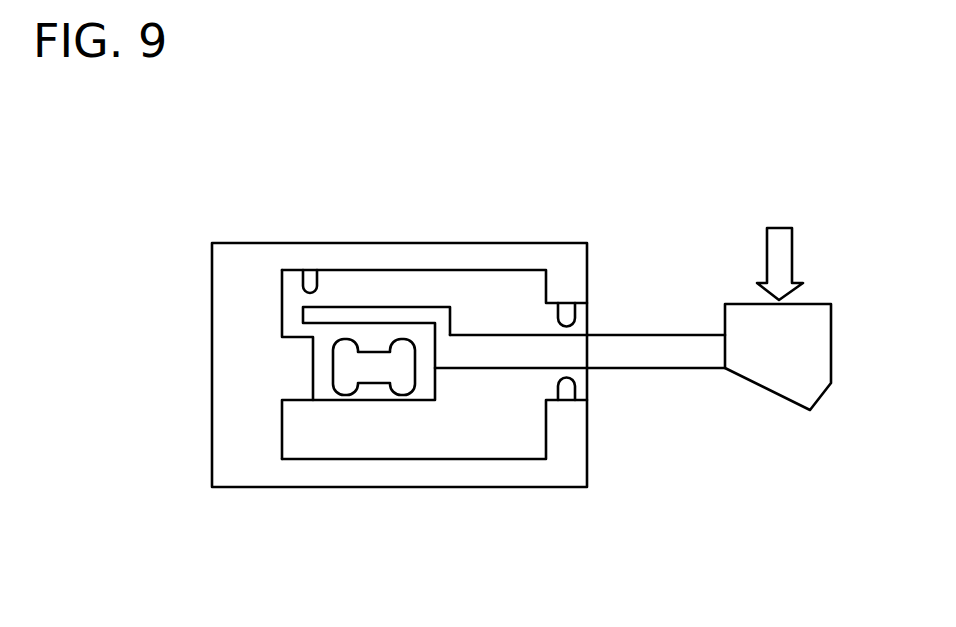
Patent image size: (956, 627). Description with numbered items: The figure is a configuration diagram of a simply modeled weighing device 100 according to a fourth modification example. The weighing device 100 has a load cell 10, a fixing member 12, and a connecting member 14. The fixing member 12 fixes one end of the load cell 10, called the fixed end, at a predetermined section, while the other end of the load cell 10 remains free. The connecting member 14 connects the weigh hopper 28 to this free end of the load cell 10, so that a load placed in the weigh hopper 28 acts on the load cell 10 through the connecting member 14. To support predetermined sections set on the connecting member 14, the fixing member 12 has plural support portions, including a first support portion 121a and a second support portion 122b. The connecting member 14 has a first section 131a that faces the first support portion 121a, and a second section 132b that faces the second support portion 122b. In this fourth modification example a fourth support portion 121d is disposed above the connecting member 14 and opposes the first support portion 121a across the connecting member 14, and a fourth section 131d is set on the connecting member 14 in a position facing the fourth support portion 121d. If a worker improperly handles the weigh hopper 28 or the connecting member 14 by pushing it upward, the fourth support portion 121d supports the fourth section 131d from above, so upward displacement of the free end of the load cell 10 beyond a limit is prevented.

The weighing device 100 is at (682, 195).
The load cell 10 is at (325, 395).
The fixing member 12 is at (237, 258).
The connecting member 14 is at (495, 348).
The weigh hopper 28 is at (783, 375).
The second support portion 122b is at (313, 283).
The second section 132b is at (314, 306).
The fourth support portion 121d is at (577, 317).
The first support portion 121a is at (570, 387).
The fourth section 131d is at (565, 344).
The first section 131a is at (570, 358).